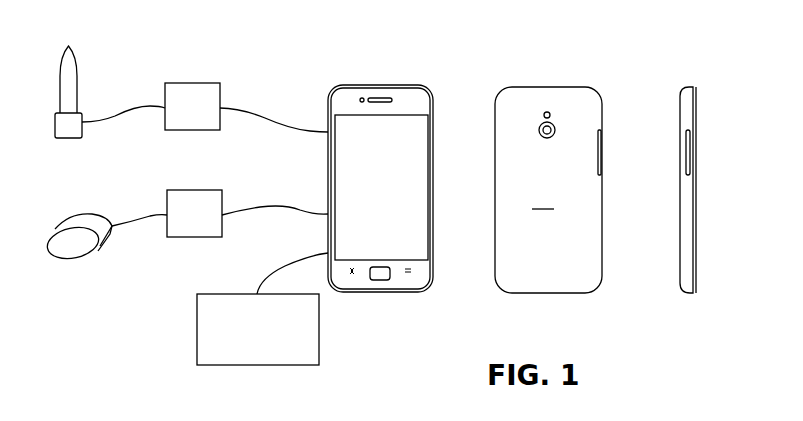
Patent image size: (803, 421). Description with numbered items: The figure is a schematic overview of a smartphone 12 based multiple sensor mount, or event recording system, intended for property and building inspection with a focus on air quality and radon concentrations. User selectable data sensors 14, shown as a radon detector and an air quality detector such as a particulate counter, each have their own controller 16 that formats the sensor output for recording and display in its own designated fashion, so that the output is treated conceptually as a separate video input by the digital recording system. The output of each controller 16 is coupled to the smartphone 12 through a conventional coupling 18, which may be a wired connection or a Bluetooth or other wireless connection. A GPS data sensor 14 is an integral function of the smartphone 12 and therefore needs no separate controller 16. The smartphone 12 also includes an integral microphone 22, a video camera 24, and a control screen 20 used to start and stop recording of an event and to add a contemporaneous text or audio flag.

The smartphone 12 is at (412, 293).
The data sensor 14 is at (78, 71).
The controller 16 is at (181, 118).
The coupling 18 is at (121, 112).
The control screen 20 is at (364, 197).
The microphone 22 is at (378, 282).
The video camera 24 is at (540, 122).